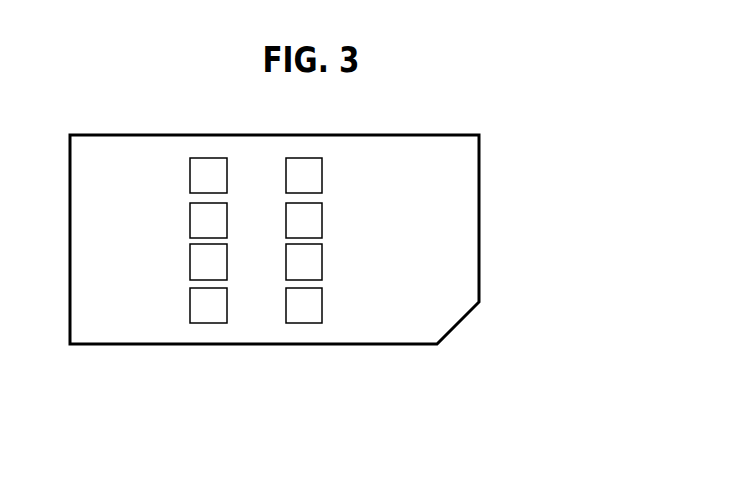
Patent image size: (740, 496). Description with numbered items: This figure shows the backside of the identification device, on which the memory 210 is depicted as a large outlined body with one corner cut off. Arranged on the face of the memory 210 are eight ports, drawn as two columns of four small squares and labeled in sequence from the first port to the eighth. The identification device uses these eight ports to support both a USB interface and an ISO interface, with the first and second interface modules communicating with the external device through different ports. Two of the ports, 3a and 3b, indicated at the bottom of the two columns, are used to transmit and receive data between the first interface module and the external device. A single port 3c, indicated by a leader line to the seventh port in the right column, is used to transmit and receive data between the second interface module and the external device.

The memory 210 is at (480, 185).
The port 3a is at (208, 323).
The port 3b is at (327, 285).
The port 3c is at (322, 266).